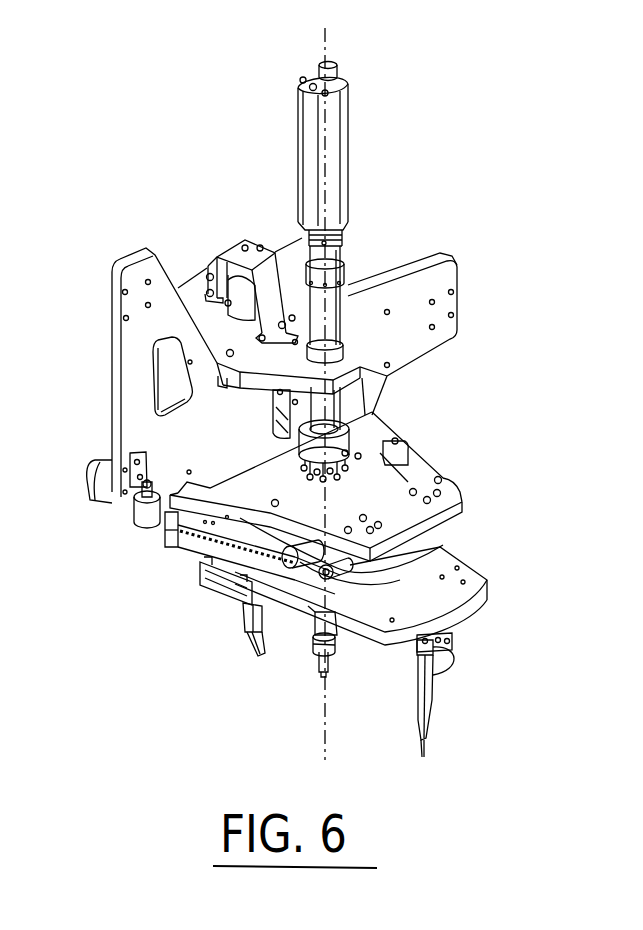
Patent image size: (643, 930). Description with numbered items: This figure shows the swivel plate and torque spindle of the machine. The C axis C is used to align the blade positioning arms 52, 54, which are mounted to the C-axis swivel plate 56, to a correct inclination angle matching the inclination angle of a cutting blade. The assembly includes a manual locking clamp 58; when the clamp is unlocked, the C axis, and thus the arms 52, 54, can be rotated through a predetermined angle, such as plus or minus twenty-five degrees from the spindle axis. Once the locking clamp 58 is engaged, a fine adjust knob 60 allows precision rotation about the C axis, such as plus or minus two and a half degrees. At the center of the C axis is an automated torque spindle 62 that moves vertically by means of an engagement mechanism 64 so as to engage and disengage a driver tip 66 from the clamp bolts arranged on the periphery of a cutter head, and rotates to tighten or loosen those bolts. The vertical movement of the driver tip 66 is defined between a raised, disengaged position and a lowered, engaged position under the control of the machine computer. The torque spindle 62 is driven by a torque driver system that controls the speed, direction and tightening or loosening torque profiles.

The blade positioning arm 52 is at (437, 717).
The blade positioning arm 54 is at (255, 660).
The C-axis swivel plate 56 is at (480, 570).
The manual locking clamp 58 is at (228, 596).
The fine adjust knob 60 is at (246, 632).
The automated torque spindle 62 is at (349, 172).
The engagement mechanism 64 is at (357, 426).
The driver tip 66 is at (333, 667).
The C axis C is at (334, 292).